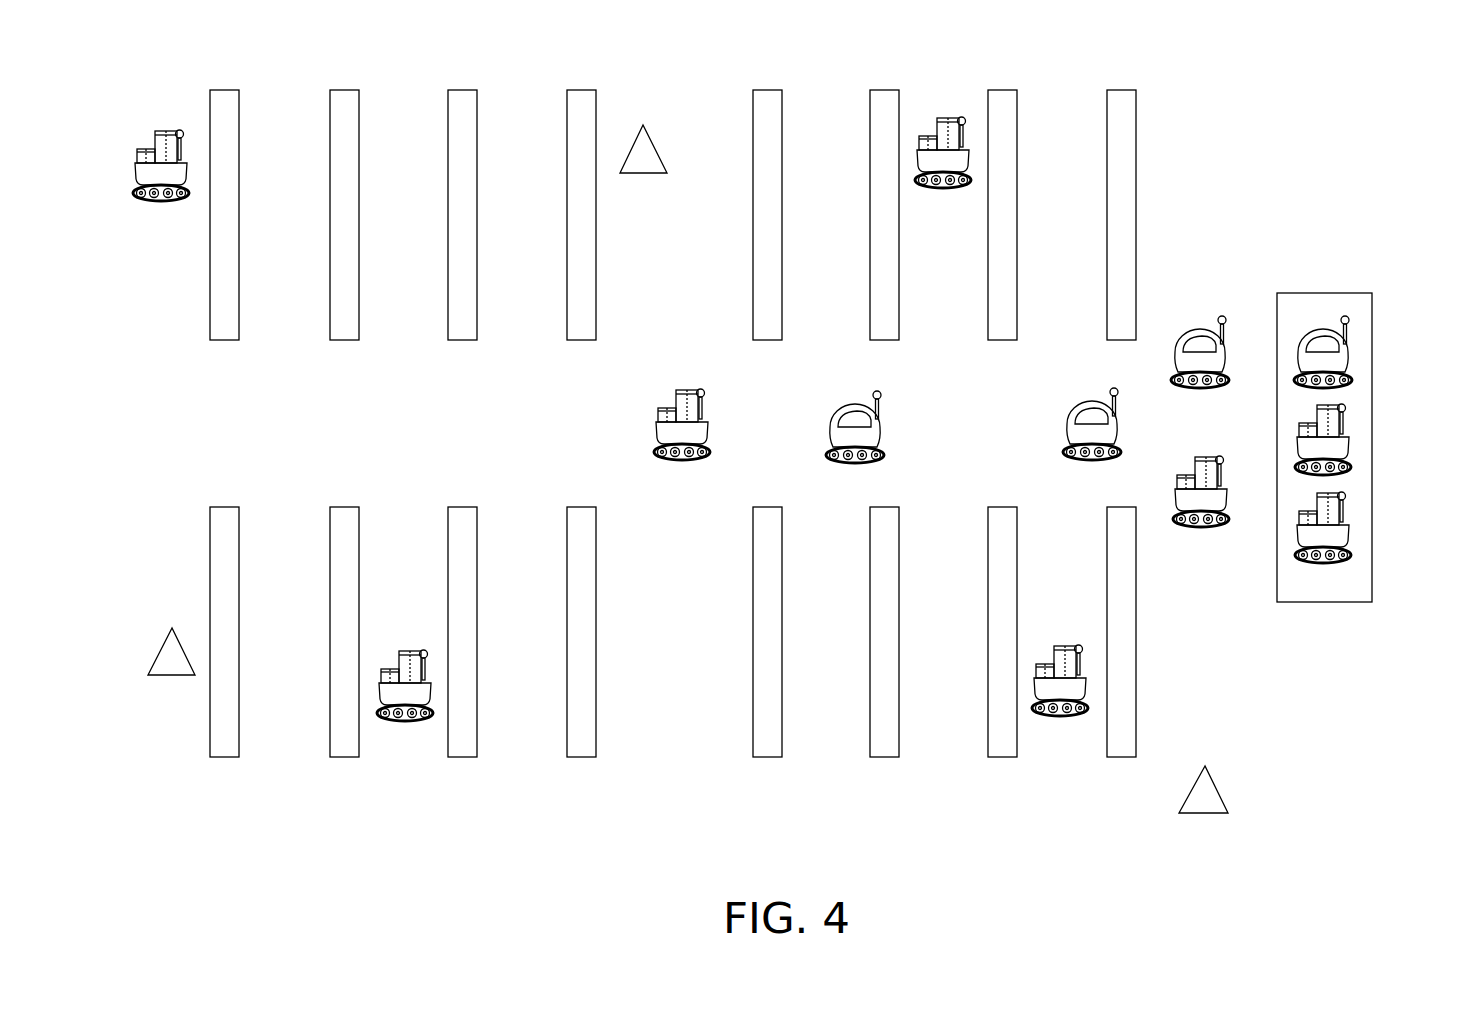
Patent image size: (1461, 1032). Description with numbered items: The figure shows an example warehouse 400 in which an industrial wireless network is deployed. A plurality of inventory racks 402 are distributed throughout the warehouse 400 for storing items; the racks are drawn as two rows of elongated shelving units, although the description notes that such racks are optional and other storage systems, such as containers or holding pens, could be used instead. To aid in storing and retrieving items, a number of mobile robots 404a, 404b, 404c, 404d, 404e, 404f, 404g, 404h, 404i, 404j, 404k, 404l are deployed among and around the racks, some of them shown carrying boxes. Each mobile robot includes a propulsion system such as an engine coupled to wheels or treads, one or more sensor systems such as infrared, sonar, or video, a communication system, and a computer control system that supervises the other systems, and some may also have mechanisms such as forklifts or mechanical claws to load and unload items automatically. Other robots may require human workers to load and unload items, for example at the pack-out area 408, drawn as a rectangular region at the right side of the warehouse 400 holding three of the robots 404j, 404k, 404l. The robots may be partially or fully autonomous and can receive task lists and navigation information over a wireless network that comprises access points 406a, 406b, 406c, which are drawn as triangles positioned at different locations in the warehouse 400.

The warehouse 400 is at (1316, 92).
The inventory racks 402 is at (1141, 82).
The mobile robot 404a is at (682, 460).
The mobile robot 404b is at (856, 463).
The mobile robot 404c is at (1092, 460).
The mobile robot 404d is at (1200, 388).
The mobile robot 404e is at (920, 188).
The mobile robot 404f is at (1038, 715).
The mobile robot 404g is at (146, 200).
The mobile robot 404h is at (386, 720).
The mobile robot 404i is at (1201, 527).
The mobile robot 404j is at (1343, 365).
The mobile robot 404k is at (1340, 440).
The mobile robot 404l is at (1340, 525).
The access point 406a is at (656, 150).
The access point 406b is at (190, 675).
The access point 406c is at (1213, 782).
The pack-out area 408 is at (1325, 293).